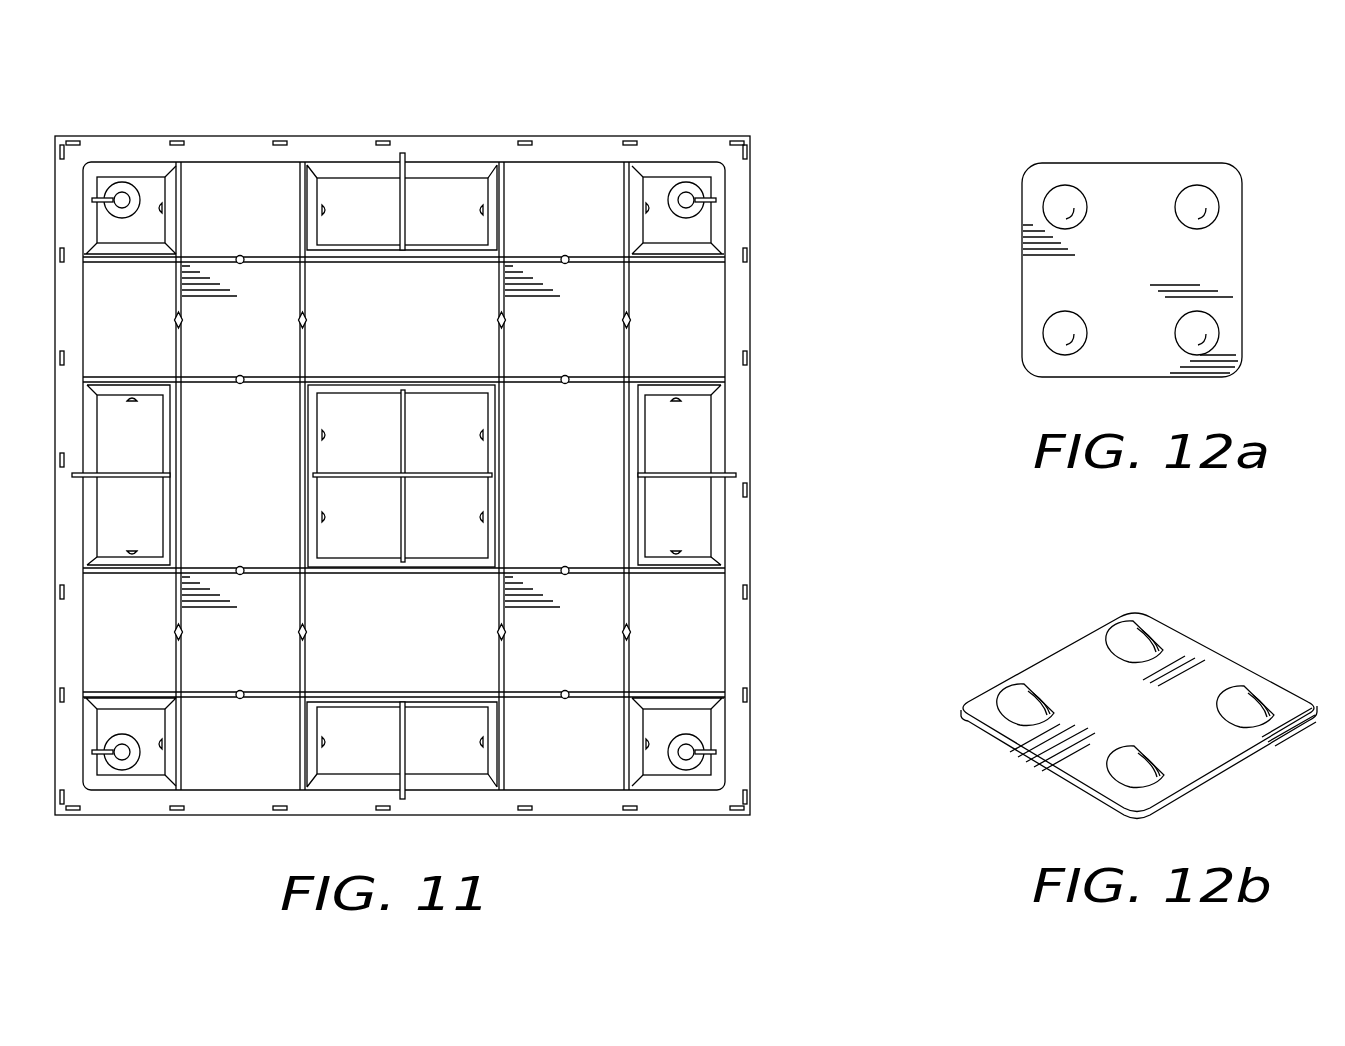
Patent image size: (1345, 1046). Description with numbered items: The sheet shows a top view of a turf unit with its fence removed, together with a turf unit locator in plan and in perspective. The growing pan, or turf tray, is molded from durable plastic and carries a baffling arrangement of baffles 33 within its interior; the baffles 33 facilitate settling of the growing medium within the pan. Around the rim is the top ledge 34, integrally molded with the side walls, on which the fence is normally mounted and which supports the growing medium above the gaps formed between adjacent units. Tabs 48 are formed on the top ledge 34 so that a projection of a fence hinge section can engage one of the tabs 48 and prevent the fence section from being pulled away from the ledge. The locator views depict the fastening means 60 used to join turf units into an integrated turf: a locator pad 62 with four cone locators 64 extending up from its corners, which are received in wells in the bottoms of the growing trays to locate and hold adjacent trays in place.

In FIG. 11, the baffles 33 is at (507, 350).
In FIG. 11, the top ledge 34 is at (404, 432).
In FIG. 11, the tab 48 is at (747, 355).
In FIG. 12a, the fastening means 60 is at (1167, 238).
In FIG. 12b, the fastening means 60 is at (1139, 700).
In FIG. 12a, the locator pad 62 is at (1243, 283).
In FIG. 12b, the locator pad 62 is at (1230, 773).
In FIG. 12a, the cone locator 64 is at (1048, 187).
In FIG. 12b, the cone locator 64 is at (1005, 697).